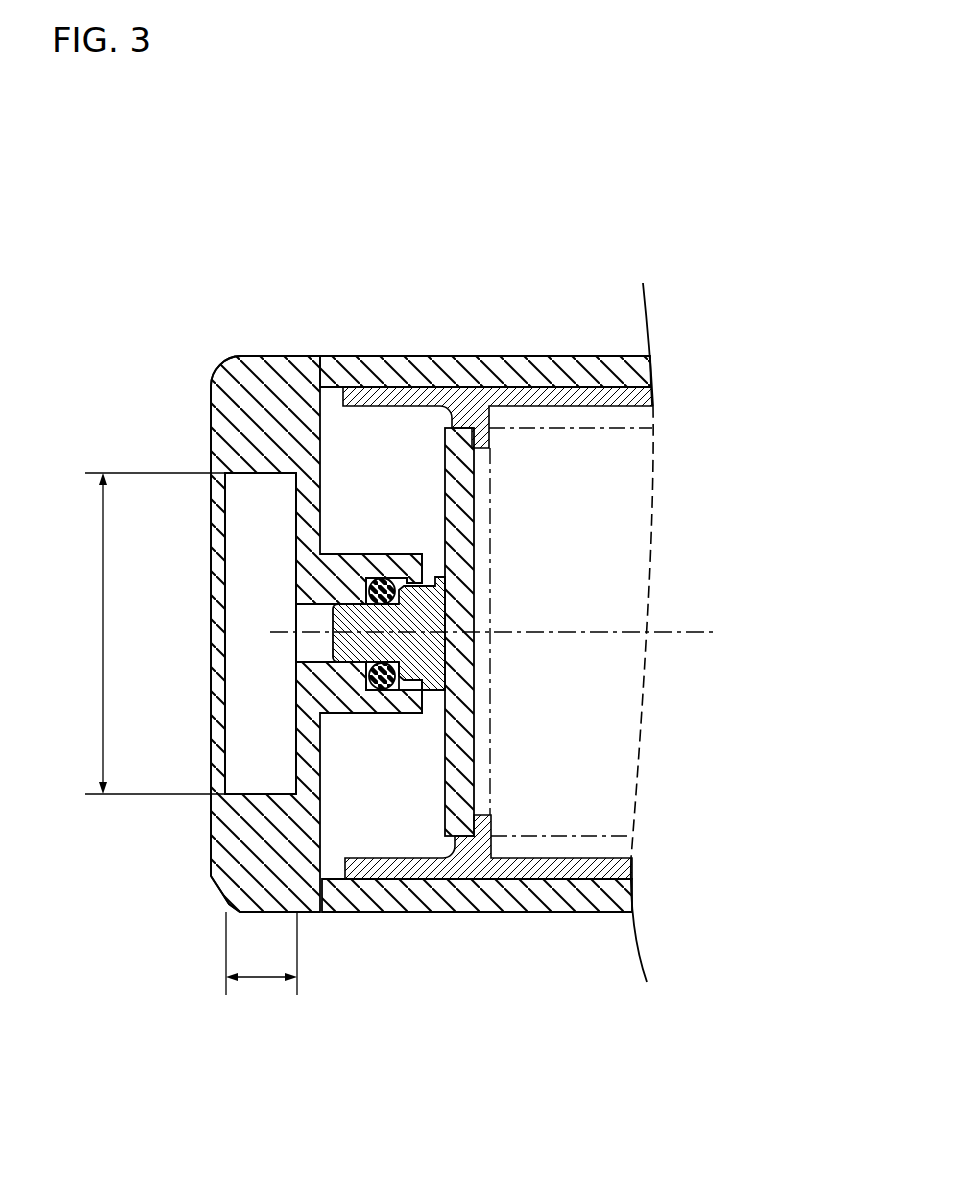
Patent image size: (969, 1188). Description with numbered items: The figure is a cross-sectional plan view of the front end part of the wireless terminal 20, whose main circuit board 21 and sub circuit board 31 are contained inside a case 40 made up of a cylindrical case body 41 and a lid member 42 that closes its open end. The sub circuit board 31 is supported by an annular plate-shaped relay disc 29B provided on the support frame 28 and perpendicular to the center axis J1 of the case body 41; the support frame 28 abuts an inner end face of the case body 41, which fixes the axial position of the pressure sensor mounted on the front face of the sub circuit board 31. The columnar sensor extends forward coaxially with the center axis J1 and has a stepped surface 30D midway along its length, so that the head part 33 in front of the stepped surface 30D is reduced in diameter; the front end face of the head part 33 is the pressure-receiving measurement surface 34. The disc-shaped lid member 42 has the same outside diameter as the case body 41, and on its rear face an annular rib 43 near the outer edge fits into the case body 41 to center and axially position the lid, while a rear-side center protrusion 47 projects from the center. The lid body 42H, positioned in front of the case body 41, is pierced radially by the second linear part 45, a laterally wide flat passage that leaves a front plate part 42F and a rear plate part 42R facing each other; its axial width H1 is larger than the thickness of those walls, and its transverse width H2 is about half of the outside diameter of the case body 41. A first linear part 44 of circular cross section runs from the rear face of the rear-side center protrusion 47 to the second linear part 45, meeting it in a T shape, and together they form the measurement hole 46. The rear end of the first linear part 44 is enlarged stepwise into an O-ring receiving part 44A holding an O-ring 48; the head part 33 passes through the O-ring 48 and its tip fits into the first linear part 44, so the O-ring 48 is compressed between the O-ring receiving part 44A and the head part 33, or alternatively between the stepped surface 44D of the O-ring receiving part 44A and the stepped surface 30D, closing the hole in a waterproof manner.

The wireless terminal 20 is at (205, 343).
The main circuit board 21 is at (546, 427).
The support frame 28 is at (439, 879).
The relay disc 29B is at (473, 838).
The stepped surface 30D is at (400, 692).
The sub circuit board 31 is at (462, 442).
The head part 33 is at (332, 620).
The pressure-receiving measurement surface 34 is at (345, 660).
The case 40 is at (383, 274).
The case body 41 is at (361, 348).
The lid member 42 is at (293, 348).
The front plate part 42F is at (212, 798).
The lid body 42H is at (213, 878).
The rear plate part 42R is at (305, 808).
The annular rib 43 is at (343, 880).
The first linear part 44 is at (318, 653).
The O-ring receiving part 44A is at (400, 700).
The stepped surface 44D is at (380, 681).
The second linear part 45 is at (267, 676).
The measurement hole 46 is at (157, 635).
The rear-side center protrusion 47 is at (362, 553).
The O-ring 48 is at (366, 580).
The center axis J1 is at (693, 632).
The width of second linear part in axial direction H1 is at (261, 961).
The width of second linear part perpendicular to axial direction H2 is at (148, 633).